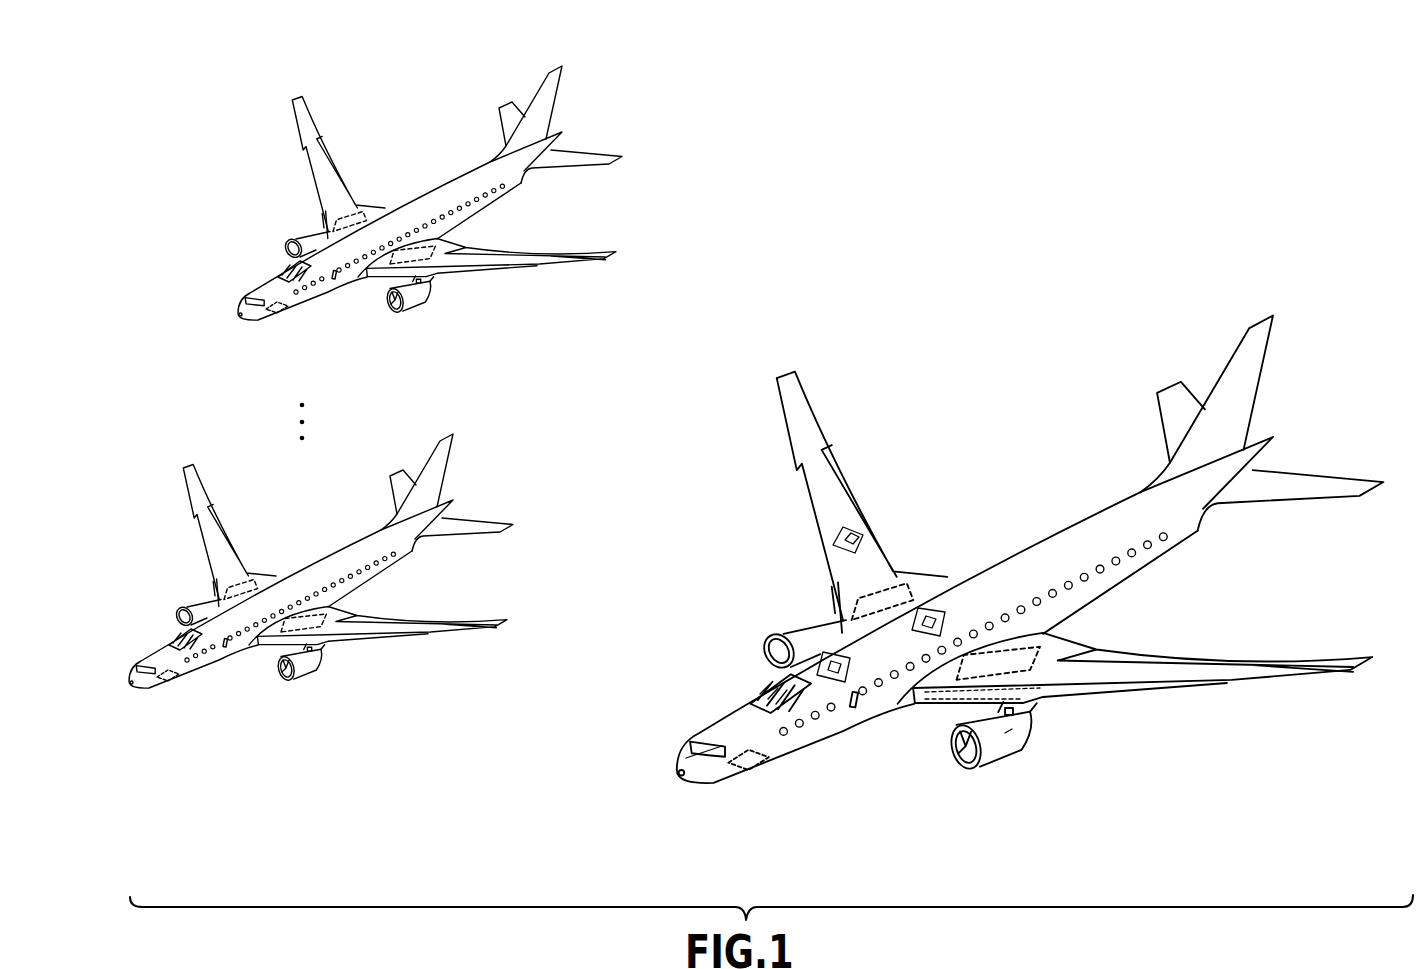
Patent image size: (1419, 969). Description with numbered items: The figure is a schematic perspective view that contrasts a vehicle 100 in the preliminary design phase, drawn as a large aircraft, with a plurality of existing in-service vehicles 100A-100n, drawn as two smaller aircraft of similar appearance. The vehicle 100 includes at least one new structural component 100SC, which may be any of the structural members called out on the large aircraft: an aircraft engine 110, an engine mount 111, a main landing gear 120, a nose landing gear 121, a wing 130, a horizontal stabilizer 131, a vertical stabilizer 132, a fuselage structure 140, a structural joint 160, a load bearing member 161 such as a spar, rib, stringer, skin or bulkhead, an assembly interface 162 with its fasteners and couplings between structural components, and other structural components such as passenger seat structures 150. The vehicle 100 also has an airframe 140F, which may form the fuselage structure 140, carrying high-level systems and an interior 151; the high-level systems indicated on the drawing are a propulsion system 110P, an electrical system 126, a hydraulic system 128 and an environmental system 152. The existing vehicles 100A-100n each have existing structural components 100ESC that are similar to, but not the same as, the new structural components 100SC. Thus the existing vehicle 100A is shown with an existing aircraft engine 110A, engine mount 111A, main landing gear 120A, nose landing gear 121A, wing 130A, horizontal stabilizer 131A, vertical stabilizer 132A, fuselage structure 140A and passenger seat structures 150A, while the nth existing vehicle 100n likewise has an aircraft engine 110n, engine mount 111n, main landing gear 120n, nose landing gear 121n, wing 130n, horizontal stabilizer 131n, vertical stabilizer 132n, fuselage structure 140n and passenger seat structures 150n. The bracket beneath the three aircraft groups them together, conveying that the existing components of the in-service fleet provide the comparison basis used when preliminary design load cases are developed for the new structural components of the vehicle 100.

The vehicle 100 is at (1010, 605).
The existing vehicle 100A is at (332, 621).
The existing vehicle 100n is at (464, 216).
The existing structural components 100ESC is at (707, 97).
The new structural component 100SC is at (1243, 765).
The aircraft engine 110 is at (894, 696).
The existing aircraft engine 110A is at (237, 649).
The existing aircraft engine 110n is at (420, 304).
The propulsion system 110P is at (956, 786).
The engine mount 111 is at (934, 648).
The existing engine mount 111A is at (272, 611).
The existing engine mount 111n is at (447, 284).
The main landing gear 120 is at (946, 631).
The existing main landing gear 120A is at (323, 576).
The existing main landing gear 120n is at (440, 247).
The nose landing gear 121 is at (724, 763).
The existing nose landing gear 121A is at (156, 708).
The existing nose landing gear 121n is at (263, 323).
The electrical system 126 is at (943, 610).
The hydraulic system 128 is at (853, 532).
The wing 130 is at (1075, 538).
The existing wing 130A is at (348, 578).
The existing wing 130n is at (578, 267).
The horizontal stabilizer 131 is at (1270, 456).
The existing horizontal stabilizer 131A is at (457, 486).
The existing horizontal stabilizer 131n is at (607, 158).
The vertical stabilizer 132 is at (1207, 404).
The existing vertical stabilizer 132A is at (457, 482).
The existing vertical stabilizer 132n is at (565, 92).
The fuselage structure 140 is at (975, 610).
The existing fuselage structure 140A is at (291, 585).
The existing fuselage structure 140n is at (463, 170).
The airframe 140F is at (718, 703).
The passenger seat structures 150 is at (780, 693).
The existing passenger seat structures 150A is at (223, 662).
The existing passenger seat structures 150n is at (298, 282).
The interior 151 is at (765, 693).
The environmental system 152 is at (826, 660).
The structural joint 160 is at (1028, 737).
The load bearing member 161 is at (926, 704).
The assembly interface 162 is at (903, 702).